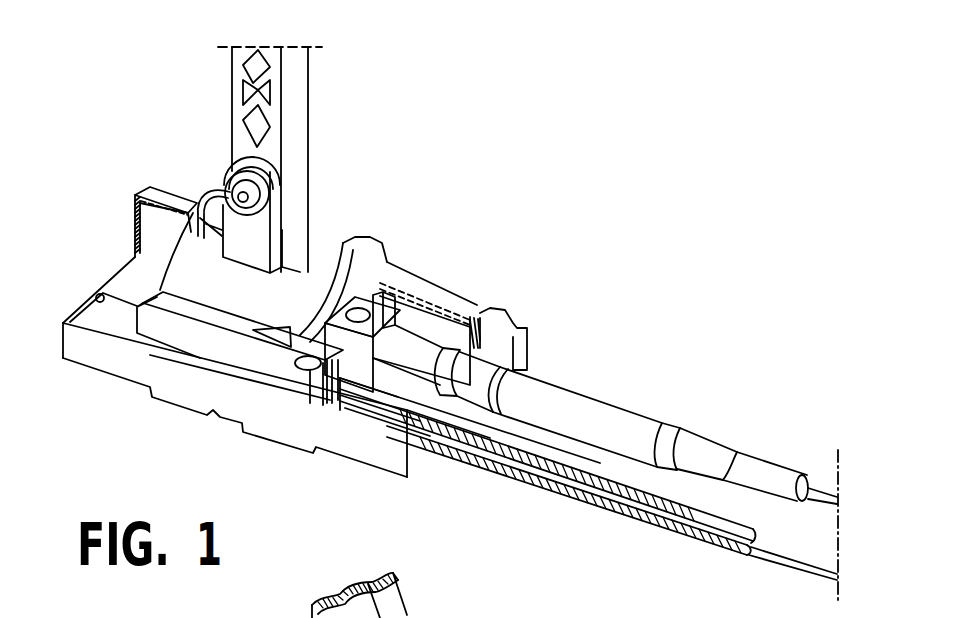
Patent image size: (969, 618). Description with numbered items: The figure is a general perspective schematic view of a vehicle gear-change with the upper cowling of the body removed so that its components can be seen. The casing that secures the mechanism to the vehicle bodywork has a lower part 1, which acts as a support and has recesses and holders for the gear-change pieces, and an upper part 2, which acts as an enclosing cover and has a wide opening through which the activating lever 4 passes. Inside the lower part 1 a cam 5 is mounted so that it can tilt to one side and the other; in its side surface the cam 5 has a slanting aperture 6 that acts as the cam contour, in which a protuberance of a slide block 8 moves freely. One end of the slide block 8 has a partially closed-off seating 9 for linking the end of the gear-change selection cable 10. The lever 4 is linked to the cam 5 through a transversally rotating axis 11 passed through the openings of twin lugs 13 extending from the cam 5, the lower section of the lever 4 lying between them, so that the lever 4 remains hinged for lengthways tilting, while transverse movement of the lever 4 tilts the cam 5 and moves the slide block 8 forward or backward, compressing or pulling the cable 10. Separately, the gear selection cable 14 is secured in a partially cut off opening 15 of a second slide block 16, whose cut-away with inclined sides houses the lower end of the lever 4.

The lower part of the casing 1 is at (140, 385).
The upper part of the casing 2 is at (467, 305).
The activating lever 4 is at (298, 113).
The cam 5 is at (185, 278).
The slanting aperture 6 is at (283, 333).
The slide block 8 is at (218, 345).
The partially closed-off seating 9 is at (308, 371).
The gear-change selection cable 10 is at (652, 513).
The transversally rotating axis 11 is at (248, 195).
The twin lugs 13 is at (253, 237).
The gear selection cable 14 is at (820, 495).
The partially cut off opening 15 is at (357, 310).
The second slide block 16 is at (345, 375).